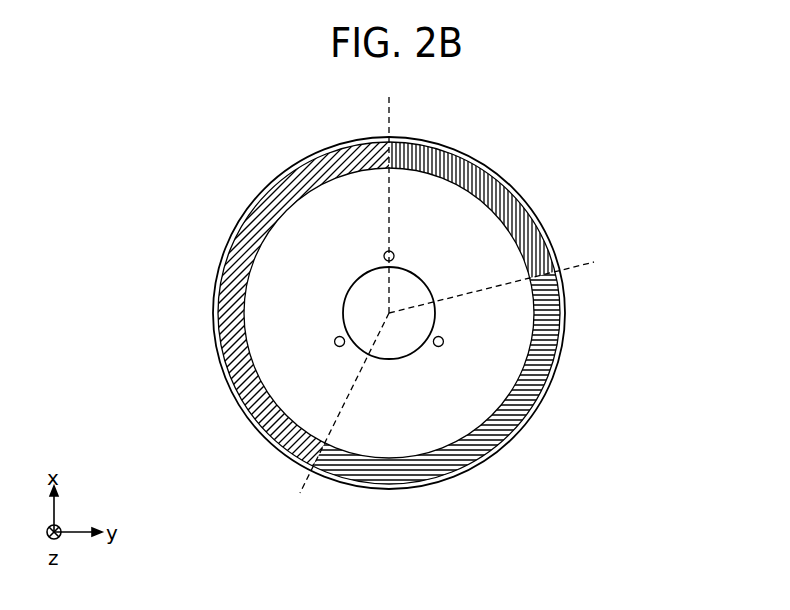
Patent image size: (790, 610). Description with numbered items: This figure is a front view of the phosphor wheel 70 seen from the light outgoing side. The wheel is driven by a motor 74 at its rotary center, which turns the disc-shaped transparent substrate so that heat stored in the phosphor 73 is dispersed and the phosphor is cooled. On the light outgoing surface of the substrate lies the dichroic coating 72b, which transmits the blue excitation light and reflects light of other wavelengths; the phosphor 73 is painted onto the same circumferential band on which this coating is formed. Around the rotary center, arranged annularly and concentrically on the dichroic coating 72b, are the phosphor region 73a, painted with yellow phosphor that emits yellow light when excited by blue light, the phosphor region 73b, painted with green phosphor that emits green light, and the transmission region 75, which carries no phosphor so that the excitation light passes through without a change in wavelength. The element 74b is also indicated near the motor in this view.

The phosphor wheel 70 is at (385, 339).
The dichroic coating 72b is at (422, 240).
The phosphor 73 is at (443, 478).
The phosphor region 73a is at (252, 222).
The phosphor region 73b is at (508, 420).
The motor 74 is at (436, 320).
The center portion 74b is at (402, 295).
The transmission region 75 is at (495, 192).